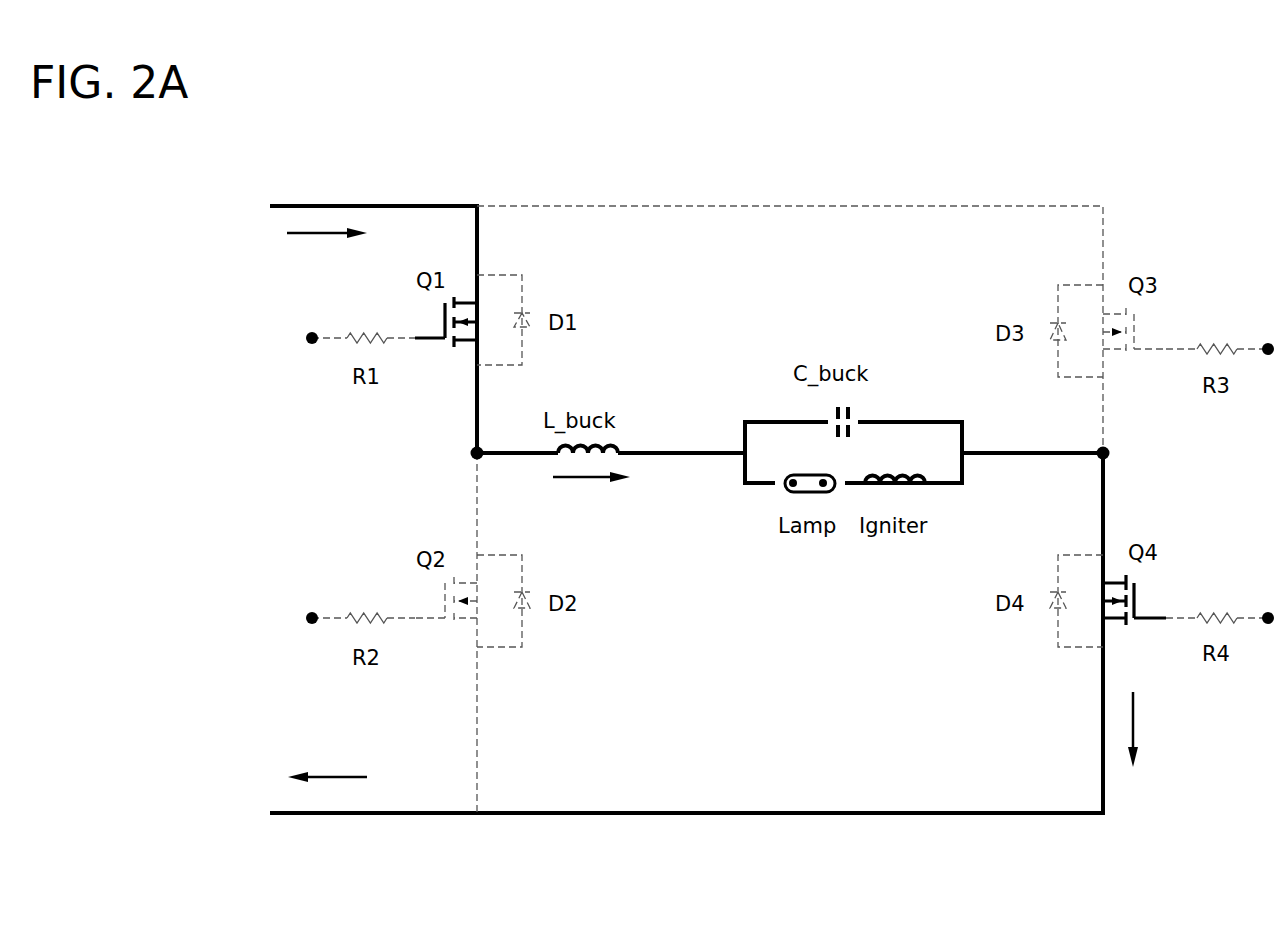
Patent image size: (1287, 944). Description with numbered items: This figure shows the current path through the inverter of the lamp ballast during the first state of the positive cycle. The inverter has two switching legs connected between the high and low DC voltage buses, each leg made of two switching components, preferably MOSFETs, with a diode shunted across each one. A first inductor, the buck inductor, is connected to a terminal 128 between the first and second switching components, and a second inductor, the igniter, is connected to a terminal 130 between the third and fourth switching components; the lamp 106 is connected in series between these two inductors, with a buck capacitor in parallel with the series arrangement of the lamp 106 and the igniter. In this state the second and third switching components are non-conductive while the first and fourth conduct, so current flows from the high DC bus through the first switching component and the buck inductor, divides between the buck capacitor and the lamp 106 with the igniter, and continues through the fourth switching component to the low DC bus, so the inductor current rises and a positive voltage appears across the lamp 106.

The terminal 128 is at (470, 458).
The terminal 130 is at (1110, 460).
The lamp 106 is at (790, 488).